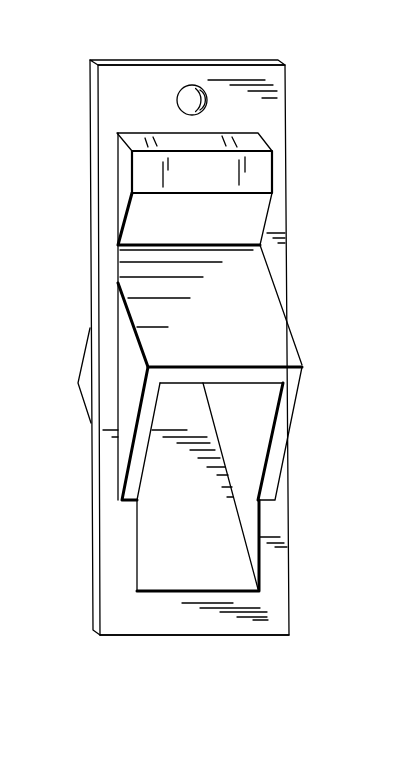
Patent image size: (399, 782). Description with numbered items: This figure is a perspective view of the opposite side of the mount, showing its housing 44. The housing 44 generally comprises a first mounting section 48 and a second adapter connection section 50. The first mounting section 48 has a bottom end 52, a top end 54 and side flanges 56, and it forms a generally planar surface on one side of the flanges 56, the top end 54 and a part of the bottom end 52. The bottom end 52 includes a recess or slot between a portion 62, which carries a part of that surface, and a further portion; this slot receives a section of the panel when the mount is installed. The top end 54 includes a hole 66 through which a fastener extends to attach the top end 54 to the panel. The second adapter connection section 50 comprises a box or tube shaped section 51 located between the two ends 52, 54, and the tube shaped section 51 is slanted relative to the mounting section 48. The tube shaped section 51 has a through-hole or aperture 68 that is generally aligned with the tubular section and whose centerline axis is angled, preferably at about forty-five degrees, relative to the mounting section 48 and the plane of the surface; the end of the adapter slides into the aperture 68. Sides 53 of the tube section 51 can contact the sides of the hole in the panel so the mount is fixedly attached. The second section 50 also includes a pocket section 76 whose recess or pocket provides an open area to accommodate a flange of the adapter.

The housing 44 is at (283, 54).
The first mounting section 48 is at (285, 133).
The second adapter connection section 50 is at (287, 350).
The tube shaped section 51 is at (295, 375).
The bottom end 52 is at (282, 622).
The sides 53 is at (88, 373).
The top end 54 is at (107, 72).
The side flanges 56 is at (282, 268).
The portion 62 is at (187, 628).
The hole 66 is at (188, 91).
The aperture 68 is at (243, 429).
The pocket section 76 is at (260, 170).